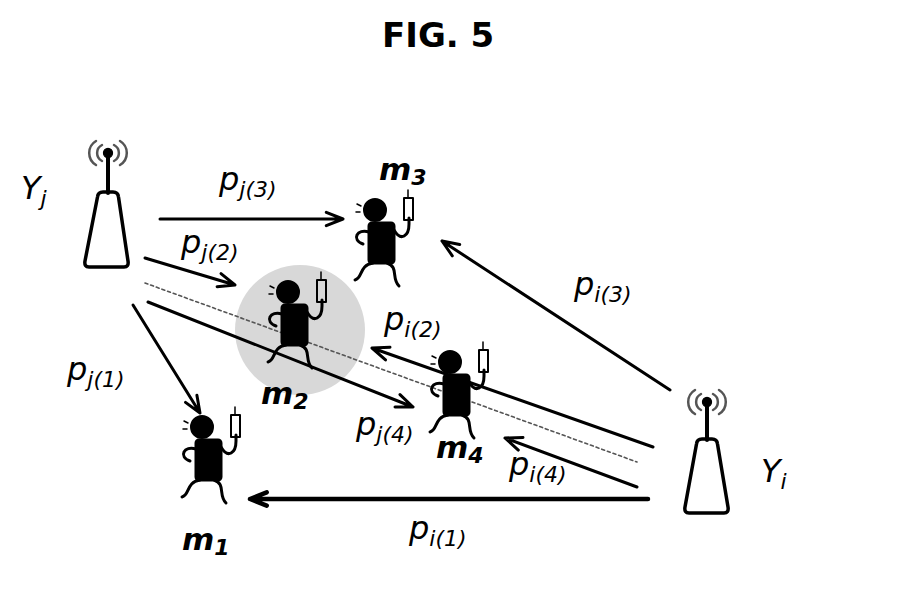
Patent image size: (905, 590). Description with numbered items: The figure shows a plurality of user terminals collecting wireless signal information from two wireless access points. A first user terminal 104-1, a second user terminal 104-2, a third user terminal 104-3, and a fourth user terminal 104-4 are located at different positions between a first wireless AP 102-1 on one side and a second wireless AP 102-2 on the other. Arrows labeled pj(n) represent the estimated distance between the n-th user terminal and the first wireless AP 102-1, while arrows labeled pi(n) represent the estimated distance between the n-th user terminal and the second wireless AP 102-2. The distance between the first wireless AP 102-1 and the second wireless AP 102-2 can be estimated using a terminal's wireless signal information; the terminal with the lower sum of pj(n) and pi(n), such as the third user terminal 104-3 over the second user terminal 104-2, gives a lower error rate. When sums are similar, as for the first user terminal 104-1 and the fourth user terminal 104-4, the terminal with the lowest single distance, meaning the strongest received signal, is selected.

The first wireless AP 102-1 is at (130, 153).
The second wireless AP 102-2 is at (718, 447).
The first user terminal 104-1 is at (185, 452).
The second user terminal 104-2 is at (294, 270).
The third user terminal 104-3 is at (415, 207).
The fourth user terminal 104-4 is at (458, 350).